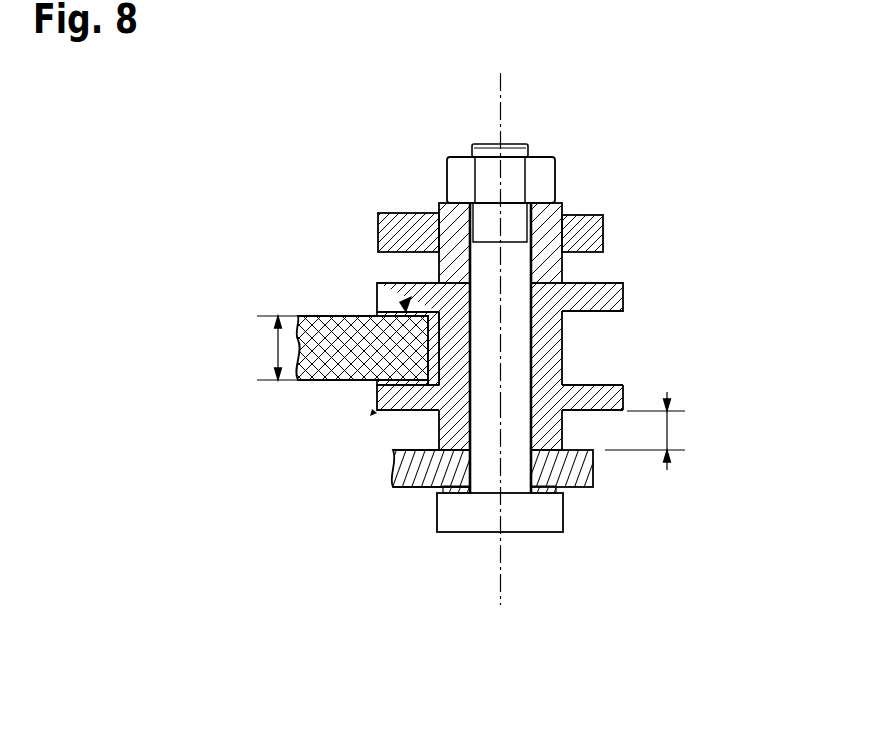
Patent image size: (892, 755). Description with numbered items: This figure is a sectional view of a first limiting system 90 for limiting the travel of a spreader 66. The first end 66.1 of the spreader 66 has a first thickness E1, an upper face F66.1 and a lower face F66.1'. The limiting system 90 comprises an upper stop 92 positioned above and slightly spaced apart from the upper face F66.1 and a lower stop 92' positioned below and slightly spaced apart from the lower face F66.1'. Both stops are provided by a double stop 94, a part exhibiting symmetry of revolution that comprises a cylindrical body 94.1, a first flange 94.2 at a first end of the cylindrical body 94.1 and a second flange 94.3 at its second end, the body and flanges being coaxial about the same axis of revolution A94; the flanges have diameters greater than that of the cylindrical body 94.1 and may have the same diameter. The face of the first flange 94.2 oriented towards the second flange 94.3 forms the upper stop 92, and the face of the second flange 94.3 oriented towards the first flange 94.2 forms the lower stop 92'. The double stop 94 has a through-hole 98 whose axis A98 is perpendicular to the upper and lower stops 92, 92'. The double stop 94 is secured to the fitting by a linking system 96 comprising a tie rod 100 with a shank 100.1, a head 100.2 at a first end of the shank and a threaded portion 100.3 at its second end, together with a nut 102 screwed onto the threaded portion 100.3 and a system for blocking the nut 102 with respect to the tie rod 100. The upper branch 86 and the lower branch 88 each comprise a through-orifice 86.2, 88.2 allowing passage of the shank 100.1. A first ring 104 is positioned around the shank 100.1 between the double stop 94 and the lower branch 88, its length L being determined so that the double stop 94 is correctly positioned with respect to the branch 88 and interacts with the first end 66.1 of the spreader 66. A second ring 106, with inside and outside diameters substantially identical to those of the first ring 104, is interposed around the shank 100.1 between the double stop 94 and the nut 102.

The spreader 66 is at (309, 340).
The first end of the spreader 66.1 is at (348, 339).
The upper branch 86 is at (401, 215).
The through-orifice of the upper branch 86.2 is at (439, 205).
The lower branch 88 is at (490, 523).
The through-orifice of the lower branch 88.2 is at (470, 466).
The first limiting system 90 is at (438, 573).
The upper stop 92 is at (371, 347).
The lower stop 92' is at (368, 400).
The double stop 94 is at (529, 370).
The cylindrical body 94.1 is at (550, 373).
The first flange 94.2 is at (617, 300).
The second flange 94.3 is at (617, 394).
The linking system 96 is at (522, 520).
The through-hole 98 is at (530, 332).
The tie rod 100 is at (566, 396).
The shank 100.1 is at (523, 445).
The head 100.2 is at (548, 520).
The threaded portion 100.3 is at (532, 222).
The nut 102 is at (554, 163).
The first ring 104 is at (449, 429).
The second ring 106 is at (557, 254).
The axis of revolution A94 is at (502, 103).
The axis of the through-hole A98 is at (502, 403).
The first thickness E1 is at (261, 348).
The length of the first ring L is at (645, 431).
The upper face F66.1 is at (357, 267).
The lower face F66.1' is at (310, 459).